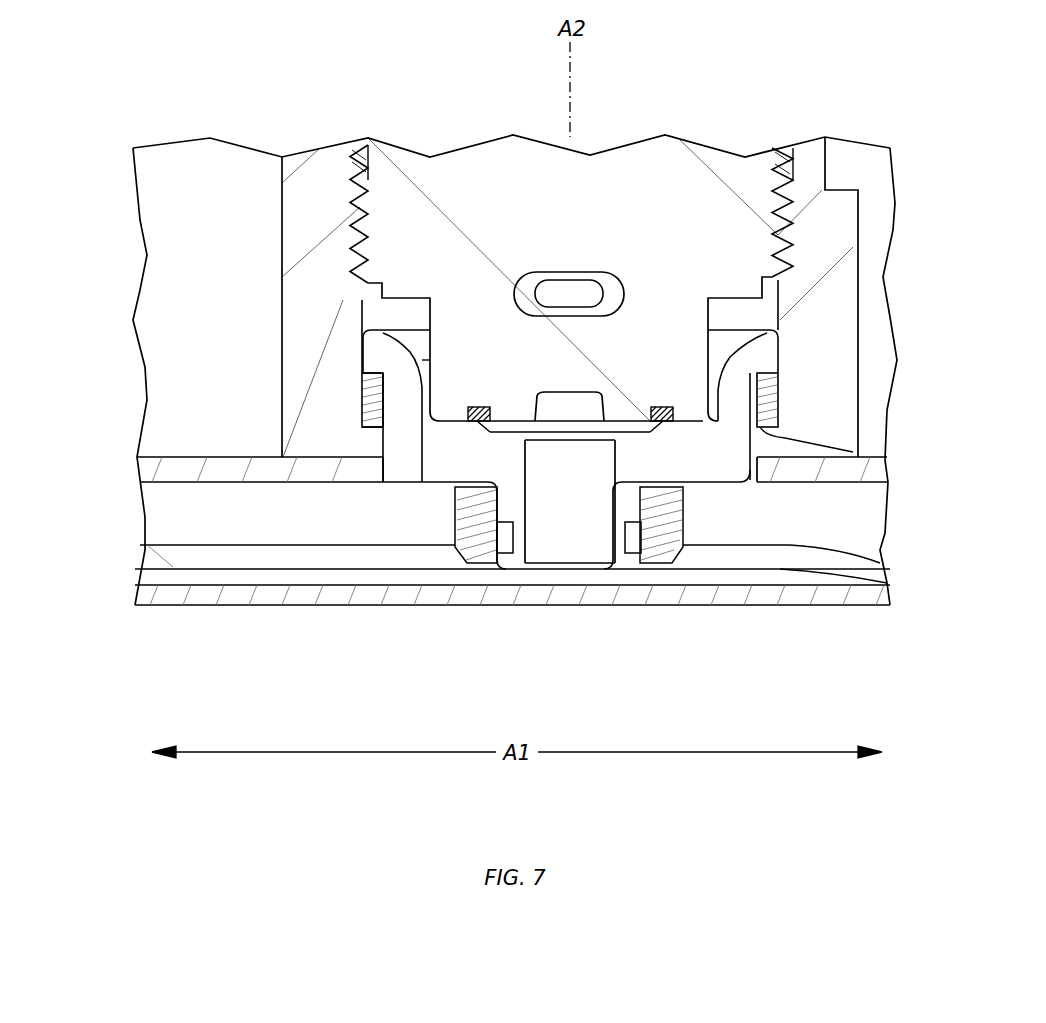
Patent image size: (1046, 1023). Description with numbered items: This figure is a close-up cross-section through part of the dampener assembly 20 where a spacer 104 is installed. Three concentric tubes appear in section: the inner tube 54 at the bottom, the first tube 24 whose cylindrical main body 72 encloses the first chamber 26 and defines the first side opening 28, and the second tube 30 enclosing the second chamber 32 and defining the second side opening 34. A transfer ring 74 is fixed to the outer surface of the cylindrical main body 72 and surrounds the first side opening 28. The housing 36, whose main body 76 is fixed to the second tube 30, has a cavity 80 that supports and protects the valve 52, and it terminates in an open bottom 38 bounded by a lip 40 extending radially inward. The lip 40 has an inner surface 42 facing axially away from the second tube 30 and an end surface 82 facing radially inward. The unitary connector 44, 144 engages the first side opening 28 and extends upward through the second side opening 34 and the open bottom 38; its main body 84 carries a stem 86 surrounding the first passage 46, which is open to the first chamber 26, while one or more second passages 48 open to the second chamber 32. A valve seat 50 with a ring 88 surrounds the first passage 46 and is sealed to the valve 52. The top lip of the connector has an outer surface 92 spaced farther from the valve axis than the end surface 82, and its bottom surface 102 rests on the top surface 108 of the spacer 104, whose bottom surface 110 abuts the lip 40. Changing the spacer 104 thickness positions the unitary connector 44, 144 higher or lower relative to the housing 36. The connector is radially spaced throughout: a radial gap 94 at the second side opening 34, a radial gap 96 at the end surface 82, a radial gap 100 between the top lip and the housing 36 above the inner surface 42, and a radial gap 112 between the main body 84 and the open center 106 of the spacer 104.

The dampener assembly 20 is at (92, 185).
The first tube 24 is at (830, 567).
The first chamber 26 is at (458, 545).
The first side opening 28 is at (498, 572).
The second tube 30 is at (173, 467).
The second chamber 32 is at (168, 513).
The second side opening 34 is at (380, 468).
The housing 36 is at (244, 184).
The open bottom 38 is at (400, 450).
The lip 40 is at (385, 440).
The inner surface 42 is at (772, 445).
The unitary connector 44 is at (425, 475).
The unitary connector 144 is at (425, 475).
The first passage 46 is at (560, 540).
The second passage 48 is at (383, 548).
The valve seat 50 is at (482, 416).
The valve 52 is at (664, 175).
The inner tube 54 is at (828, 593).
The cylindrical main body 72 is at (205, 557).
The transfer ring 74 is at (702, 535).
The main body 76 is at (322, 172).
The cavity 80 is at (379, 313).
The end surface 82 is at (762, 455).
The main body 84 is at (667, 462).
The stem 86 is at (613, 548).
The ring 88 is at (462, 418).
The outer surface 92 is at (382, 350).
The radial gap 94 is at (748, 470).
The radial gap 96 is at (370, 367).
The radial gap 100 is at (780, 357).
The bottom surface 102 is at (402, 328).
The spacer 104 is at (363, 425).
The open center 106 is at (780, 412).
The top surface 108 is at (368, 397).
The bottom surface 110 is at (377, 428).
The radial gap 112 is at (583, 391).